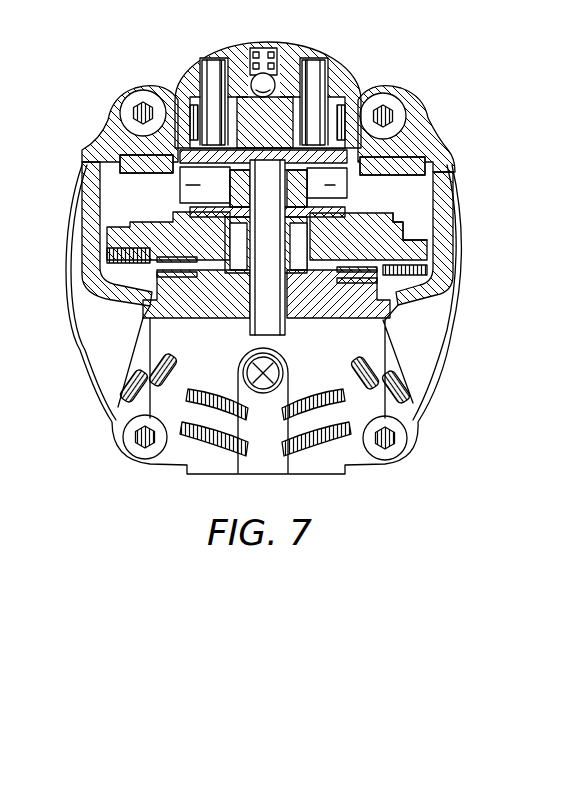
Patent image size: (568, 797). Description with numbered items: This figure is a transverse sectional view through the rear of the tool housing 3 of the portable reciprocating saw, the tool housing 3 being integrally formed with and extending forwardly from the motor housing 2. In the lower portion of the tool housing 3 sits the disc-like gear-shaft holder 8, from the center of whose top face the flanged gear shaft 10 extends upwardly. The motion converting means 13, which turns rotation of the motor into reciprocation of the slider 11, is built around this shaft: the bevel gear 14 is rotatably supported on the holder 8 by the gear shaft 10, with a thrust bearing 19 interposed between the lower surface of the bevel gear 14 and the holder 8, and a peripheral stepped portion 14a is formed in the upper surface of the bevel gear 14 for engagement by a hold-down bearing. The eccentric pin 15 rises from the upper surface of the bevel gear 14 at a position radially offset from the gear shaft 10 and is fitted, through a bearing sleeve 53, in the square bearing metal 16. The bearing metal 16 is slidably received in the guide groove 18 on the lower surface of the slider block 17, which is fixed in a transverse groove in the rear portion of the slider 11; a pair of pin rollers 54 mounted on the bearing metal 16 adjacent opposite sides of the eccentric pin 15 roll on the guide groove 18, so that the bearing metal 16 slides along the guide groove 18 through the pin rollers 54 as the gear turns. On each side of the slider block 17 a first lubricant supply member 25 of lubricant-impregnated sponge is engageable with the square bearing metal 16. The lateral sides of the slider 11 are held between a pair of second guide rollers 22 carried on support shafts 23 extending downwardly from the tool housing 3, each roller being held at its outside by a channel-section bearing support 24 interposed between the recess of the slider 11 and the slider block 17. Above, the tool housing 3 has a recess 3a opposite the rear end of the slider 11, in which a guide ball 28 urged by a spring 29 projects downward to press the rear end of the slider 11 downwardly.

The motor housing 2 is at (88, 372).
The tool housing 3 is at (83, 183).
The recess 3a is at (280, 108).
The gear-shaft holder 8 is at (140, 312).
The gear shaft 10 is at (385, 320).
The slider 11 is at (303, 100).
The motion converting means 13 is at (407, 207).
The bevel gear 14 is at (417, 253).
The peripheral stepped portion 14a is at (413, 240).
The eccentric pin 15 is at (237, 180).
The square bearing metal 16 is at (230, 190).
The slider block 17 is at (407, 133).
The guide groove 18 is at (450, 170).
The thrust bearing 19 is at (140, 303).
The second guide rollers 22 is at (217, 133).
The support shafts 23 is at (207, 67).
The bearing support 24 is at (127, 140).
The first lubricant supply members 25 is at (115, 163).
The guide ball 28 is at (250, 82).
The spring 29 is at (263, 46).
The bearing sleeve 53 is at (395, 275).
The pin rollers 54 is at (190, 118).